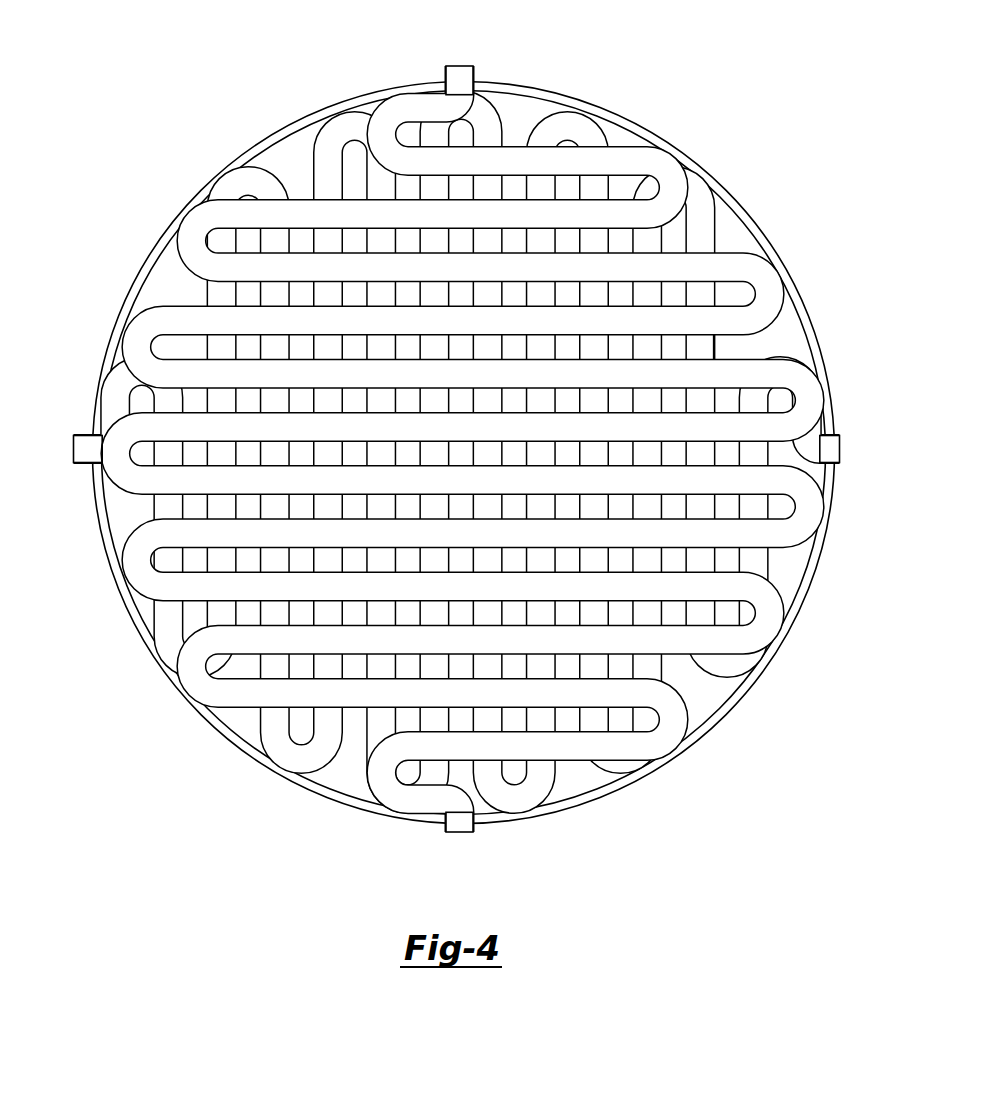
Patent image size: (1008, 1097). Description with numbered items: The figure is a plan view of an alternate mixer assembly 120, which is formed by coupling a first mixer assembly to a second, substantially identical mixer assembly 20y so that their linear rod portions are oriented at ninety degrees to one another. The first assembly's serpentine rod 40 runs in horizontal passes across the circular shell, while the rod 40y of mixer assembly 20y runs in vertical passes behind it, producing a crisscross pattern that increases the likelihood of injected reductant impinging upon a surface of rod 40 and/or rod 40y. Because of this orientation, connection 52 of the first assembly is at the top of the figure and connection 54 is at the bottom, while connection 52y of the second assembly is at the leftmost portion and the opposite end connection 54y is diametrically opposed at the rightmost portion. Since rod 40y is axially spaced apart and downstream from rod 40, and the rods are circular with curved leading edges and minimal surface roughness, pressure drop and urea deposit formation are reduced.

The mixer assembly 120 is at (810, 274).
The rod 40 is at (731, 244).
The rod 40y is at (724, 346).
The mixer assembly 20y is at (782, 562).
The connection 52 is at (474, 74).
The connection 54 is at (474, 832).
The connection 52y is at (88, 440).
The opposite end connection 54y is at (840, 440).